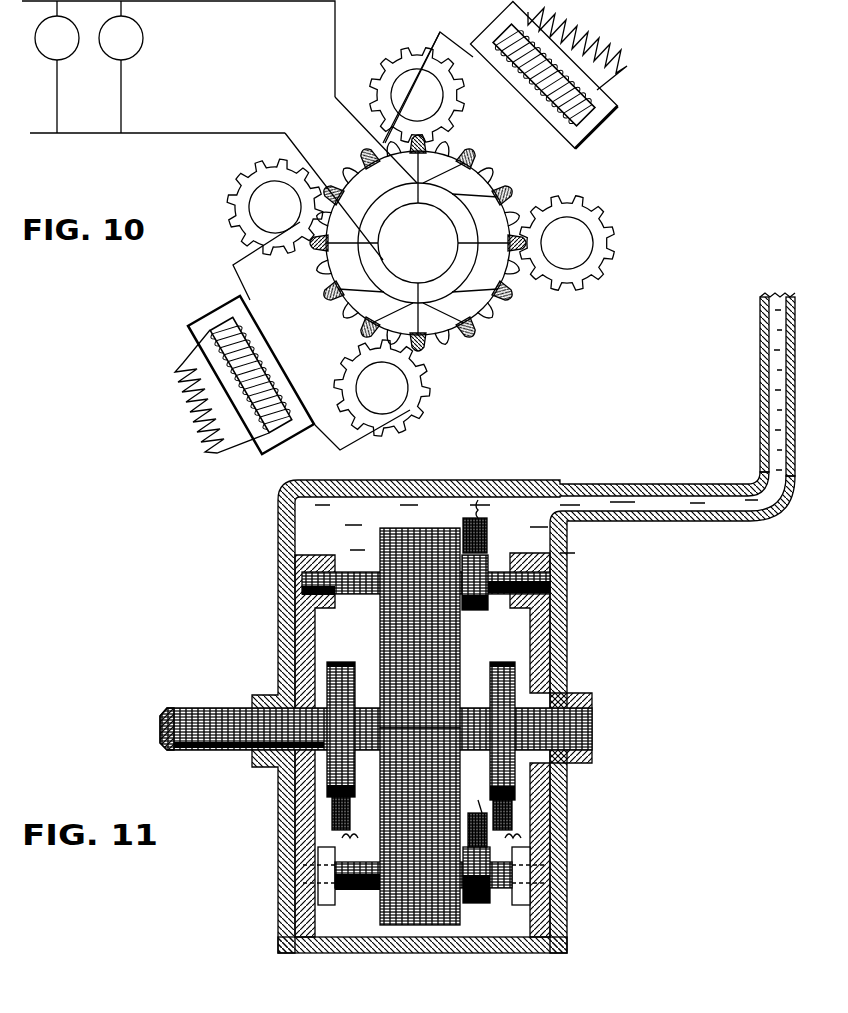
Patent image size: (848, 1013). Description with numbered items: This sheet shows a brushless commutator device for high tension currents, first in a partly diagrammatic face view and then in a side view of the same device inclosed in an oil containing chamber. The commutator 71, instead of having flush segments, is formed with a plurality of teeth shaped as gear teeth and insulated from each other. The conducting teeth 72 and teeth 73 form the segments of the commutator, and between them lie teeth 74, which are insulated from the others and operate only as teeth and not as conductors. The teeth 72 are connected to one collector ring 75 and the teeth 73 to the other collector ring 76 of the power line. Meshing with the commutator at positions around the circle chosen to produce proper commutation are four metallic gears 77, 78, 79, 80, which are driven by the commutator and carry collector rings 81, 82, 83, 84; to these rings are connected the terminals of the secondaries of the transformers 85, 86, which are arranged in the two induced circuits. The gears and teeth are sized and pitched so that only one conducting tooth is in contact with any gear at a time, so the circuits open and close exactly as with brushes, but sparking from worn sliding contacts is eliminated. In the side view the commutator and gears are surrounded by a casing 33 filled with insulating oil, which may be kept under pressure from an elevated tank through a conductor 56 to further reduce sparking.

In FIG. 11, the casing 33 is at (278, 533).
In FIG. 11, the conductor 56 is at (760, 383).
In FIG. 10, the commutator 71 is at (418, 243).
In FIG. 11, the commutator 71 is at (403, 692).
In FIG. 10, the teeth 72 is at (472, 157).
In FIG. 10, the teeth 73 is at (507, 193).
In FIG. 10, the teeth 74 is at (347, 167).
In FIG. 10, the collector ring 75 is at (398, 191).
In FIG. 11, the collector ring 75 is at (503, 677).
In FIG. 10, the collector ring 76 is at (404, 206).
In FIG. 11, the collector ring 76 is at (345, 662).
In FIG. 10, the gear 77 is at (240, 222).
In FIG. 10, the gear 78 is at (397, 63).
In FIG. 11, the gear 78 is at (417, 540).
In FIG. 10, the gear 79 is at (600, 255).
In FIG. 10, the gear 80 is at (437, 392).
In FIG. 11, the gear 80 is at (432, 910).
In FIG. 10, the collector ring 81 is at (250, 203).
In FIG. 10, the collector ring 82 is at (442, 95).
In FIG. 11, the collector ring 82 is at (478, 610).
In FIG. 10, the collector ring 83 is at (590, 243).
In FIG. 10, the collector ring 84 is at (417, 391).
In FIG. 11, the collector ring 84 is at (477, 900).
In FIG. 10, the transformer 85 is at (283, 437).
In FIG. 10, the transformer 86 is at (592, 120).